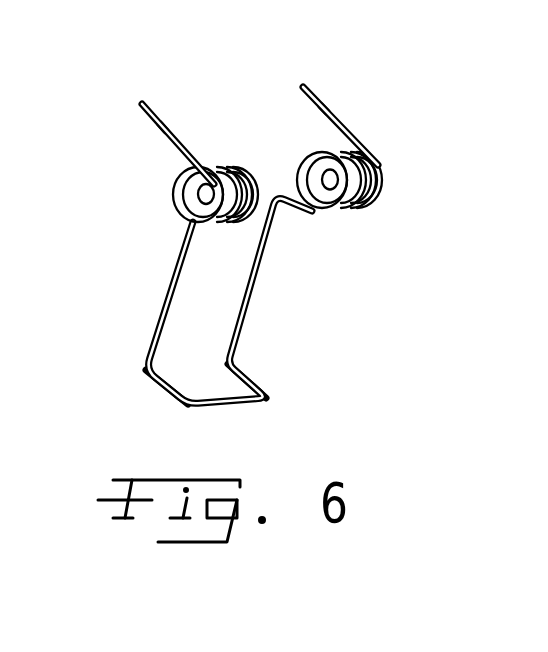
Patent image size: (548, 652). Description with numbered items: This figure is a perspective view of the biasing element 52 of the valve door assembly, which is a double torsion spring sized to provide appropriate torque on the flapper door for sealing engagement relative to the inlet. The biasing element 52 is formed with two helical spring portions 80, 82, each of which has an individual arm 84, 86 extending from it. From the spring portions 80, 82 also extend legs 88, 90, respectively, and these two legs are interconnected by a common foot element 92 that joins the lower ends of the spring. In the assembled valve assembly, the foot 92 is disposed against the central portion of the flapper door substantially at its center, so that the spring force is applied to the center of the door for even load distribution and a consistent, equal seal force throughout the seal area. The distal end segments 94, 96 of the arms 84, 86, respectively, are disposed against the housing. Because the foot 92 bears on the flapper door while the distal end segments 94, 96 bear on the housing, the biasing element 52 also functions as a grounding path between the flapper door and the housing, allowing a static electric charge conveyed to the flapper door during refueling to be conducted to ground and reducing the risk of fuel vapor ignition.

The biasing element 52 is at (138, 138).
The helical spring portion 80 is at (217, 165).
The helical spring portion 82 is at (312, 160).
The arm 84 is at (185, 152).
The arm 86 is at (346, 118).
The leg 88 is at (166, 290).
The leg 90 is at (250, 302).
The foot element 92 is at (233, 403).
The distal end segment 94 is at (140, 101).
The distal end segment 96 is at (312, 86).